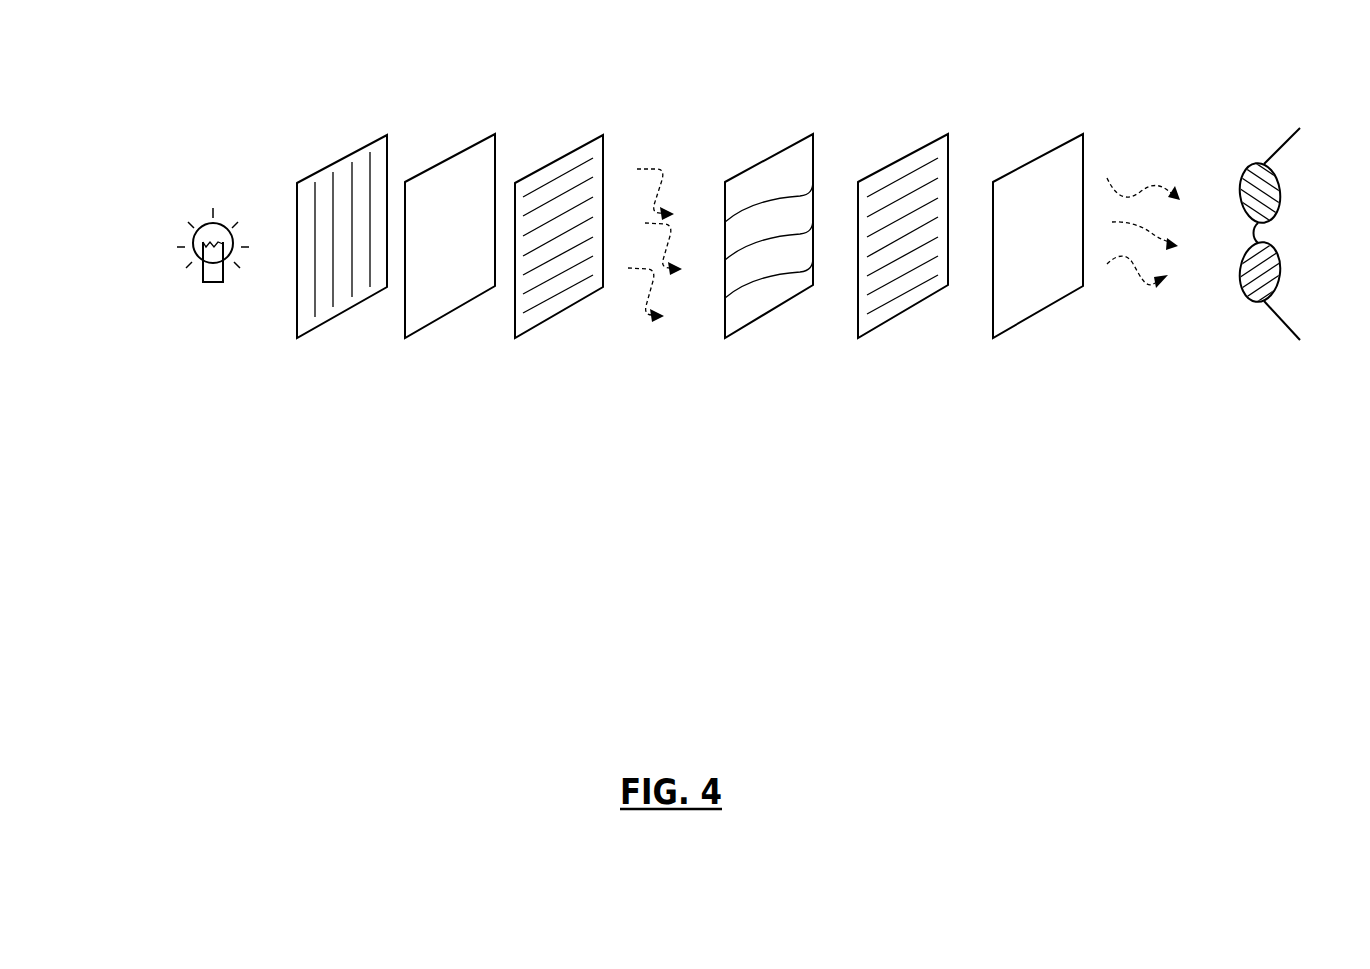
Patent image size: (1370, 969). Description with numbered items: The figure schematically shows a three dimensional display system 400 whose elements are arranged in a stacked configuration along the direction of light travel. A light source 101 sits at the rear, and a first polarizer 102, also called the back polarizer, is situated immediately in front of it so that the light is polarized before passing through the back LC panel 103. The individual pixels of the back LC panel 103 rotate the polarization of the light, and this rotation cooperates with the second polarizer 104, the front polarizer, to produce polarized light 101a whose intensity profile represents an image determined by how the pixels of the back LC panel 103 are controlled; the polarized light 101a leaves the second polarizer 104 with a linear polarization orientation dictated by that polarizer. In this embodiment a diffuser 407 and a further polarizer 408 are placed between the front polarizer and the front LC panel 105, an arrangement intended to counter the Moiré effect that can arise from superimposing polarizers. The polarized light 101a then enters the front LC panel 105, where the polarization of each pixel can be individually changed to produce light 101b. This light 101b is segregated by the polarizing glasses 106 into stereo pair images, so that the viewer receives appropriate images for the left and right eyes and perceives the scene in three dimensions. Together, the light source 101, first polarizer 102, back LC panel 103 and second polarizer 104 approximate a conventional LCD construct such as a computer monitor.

The three dimensional display system 400 is at (354, 635).
The light source 101 is at (188, 312).
The polarized light 101a is at (670, 150).
The light 101b is at (1182, 150).
The first polarizer 102 is at (340, 330).
The back LC panel 103 is at (452, 329).
The second polarizer 104 is at (558, 329).
The diffuser 407 is at (772, 328).
The polarizer 408 is at (902, 328).
The front LC panel 105 is at (1042, 328).
The polarizing glasses 106 is at (1247, 348).